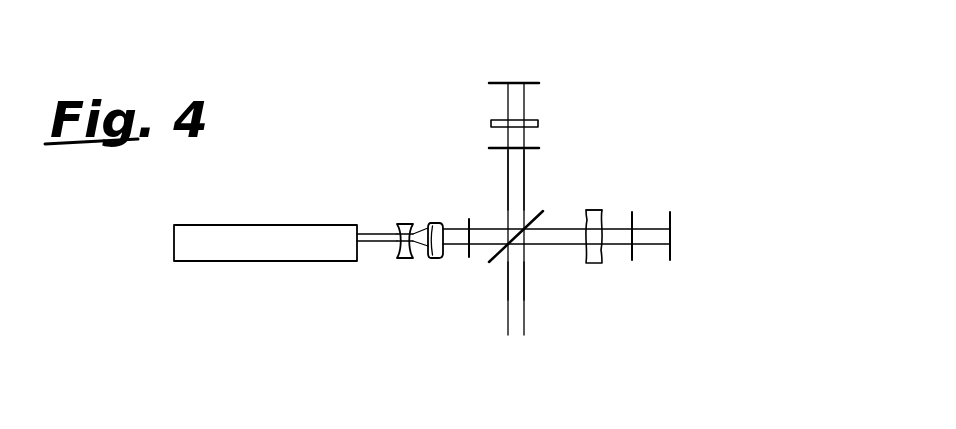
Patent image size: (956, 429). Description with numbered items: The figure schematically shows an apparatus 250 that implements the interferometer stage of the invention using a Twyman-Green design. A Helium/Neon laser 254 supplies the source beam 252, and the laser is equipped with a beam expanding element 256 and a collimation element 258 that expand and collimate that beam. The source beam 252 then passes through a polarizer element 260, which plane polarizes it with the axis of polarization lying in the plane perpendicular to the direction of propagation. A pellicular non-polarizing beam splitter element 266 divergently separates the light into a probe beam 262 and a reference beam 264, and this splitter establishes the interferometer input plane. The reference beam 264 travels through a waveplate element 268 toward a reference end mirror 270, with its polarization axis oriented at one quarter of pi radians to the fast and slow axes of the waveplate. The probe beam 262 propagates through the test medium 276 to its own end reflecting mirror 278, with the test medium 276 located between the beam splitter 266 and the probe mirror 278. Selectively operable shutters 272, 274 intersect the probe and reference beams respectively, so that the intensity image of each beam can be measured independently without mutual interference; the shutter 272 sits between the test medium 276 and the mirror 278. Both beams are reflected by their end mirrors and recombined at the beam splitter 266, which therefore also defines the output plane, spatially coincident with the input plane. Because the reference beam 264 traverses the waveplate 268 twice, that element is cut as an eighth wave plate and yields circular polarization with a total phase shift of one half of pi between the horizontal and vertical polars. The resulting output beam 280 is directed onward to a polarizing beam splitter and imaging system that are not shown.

The apparatus 250 is at (696, 141).
The source beam 252 is at (484, 225).
The Helium/Neon laser 254 is at (183, 242).
The beam expanding element 256 is at (403, 259).
The collimation element 258 is at (433, 259).
The polarizer element 260 is at (469, 258).
The probe beam 262 is at (565, 227).
The reference beam 264 is at (525, 180).
The pellicular non-polarizing beam splitter element 266 is at (491, 262).
The waveplate element 268 is at (491, 122).
The reference end mirror 270 is at (532, 83).
The shutter 272 is at (632, 258).
The shutter 274 is at (498, 148).
The test medium 276 is at (597, 210).
The end reflecting mirror 278 is at (672, 252).
The output beam 280 is at (525, 322).